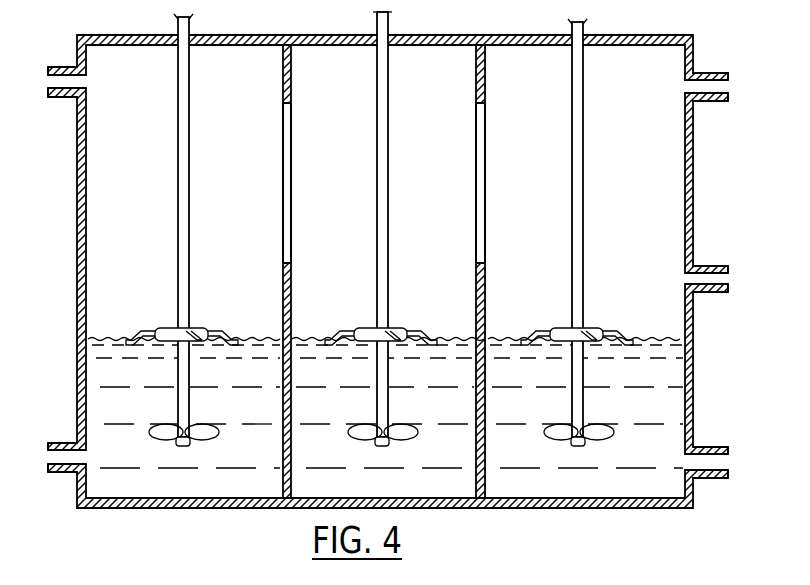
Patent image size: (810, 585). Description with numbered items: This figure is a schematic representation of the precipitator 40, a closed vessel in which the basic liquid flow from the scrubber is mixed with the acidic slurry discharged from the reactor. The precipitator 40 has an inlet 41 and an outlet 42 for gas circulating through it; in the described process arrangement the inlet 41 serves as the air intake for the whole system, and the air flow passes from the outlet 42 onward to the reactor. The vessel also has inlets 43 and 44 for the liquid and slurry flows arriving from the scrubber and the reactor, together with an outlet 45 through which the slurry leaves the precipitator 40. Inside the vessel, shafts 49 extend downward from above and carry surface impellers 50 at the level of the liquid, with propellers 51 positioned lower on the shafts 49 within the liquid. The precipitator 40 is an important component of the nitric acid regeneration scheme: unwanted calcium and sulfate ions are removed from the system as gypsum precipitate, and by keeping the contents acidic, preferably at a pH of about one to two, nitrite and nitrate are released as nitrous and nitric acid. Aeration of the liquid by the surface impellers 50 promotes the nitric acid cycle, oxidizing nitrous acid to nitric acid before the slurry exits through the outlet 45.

The precipitator 40 is at (653, 40).
The inlet 41 is at (63, 67).
The outlet 42 is at (713, 72).
The inlet 43 is at (710, 478).
The inlet 44 is at (712, 265).
The outlet 45 is at (70, 472).
The agitator shaft 49 is at (386, 237).
The surface impellers 50 is at (396, 330).
The propeller 51 is at (410, 437).